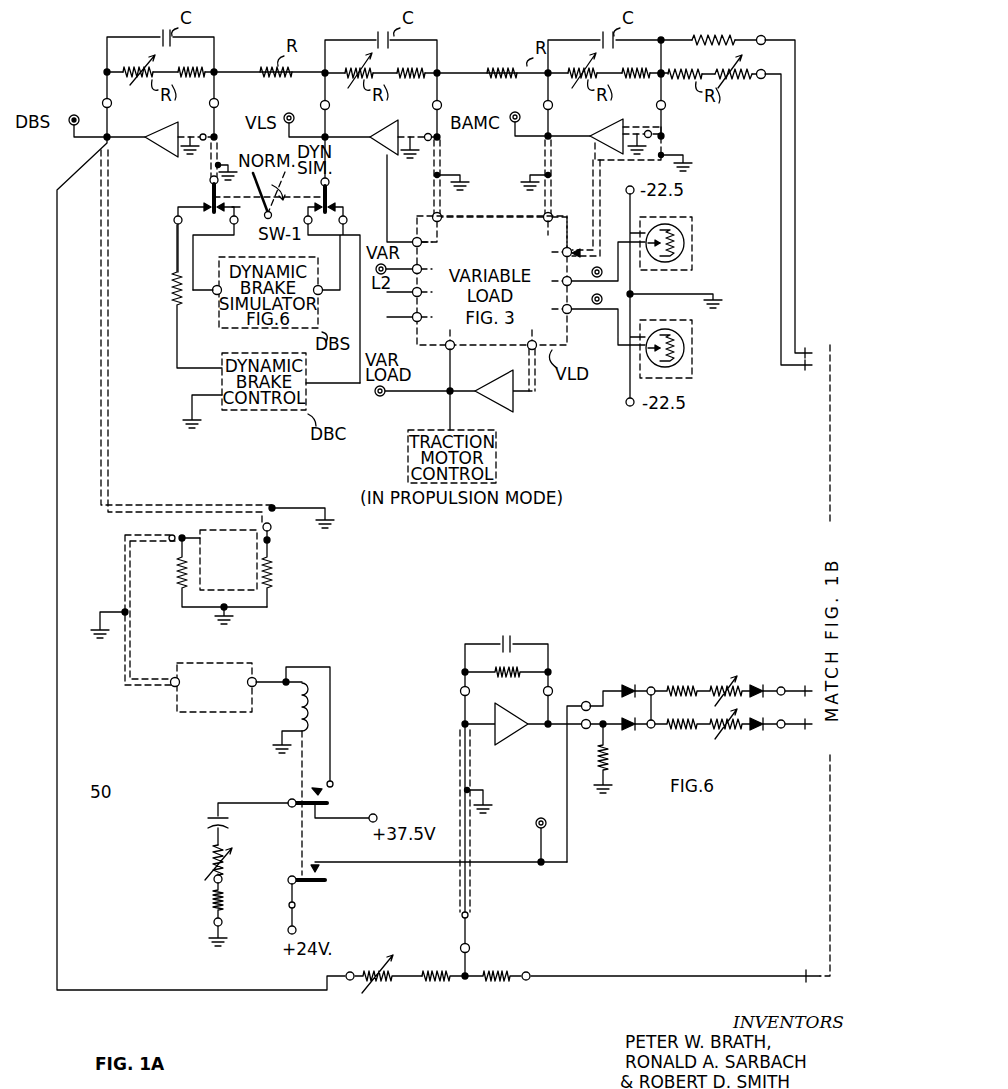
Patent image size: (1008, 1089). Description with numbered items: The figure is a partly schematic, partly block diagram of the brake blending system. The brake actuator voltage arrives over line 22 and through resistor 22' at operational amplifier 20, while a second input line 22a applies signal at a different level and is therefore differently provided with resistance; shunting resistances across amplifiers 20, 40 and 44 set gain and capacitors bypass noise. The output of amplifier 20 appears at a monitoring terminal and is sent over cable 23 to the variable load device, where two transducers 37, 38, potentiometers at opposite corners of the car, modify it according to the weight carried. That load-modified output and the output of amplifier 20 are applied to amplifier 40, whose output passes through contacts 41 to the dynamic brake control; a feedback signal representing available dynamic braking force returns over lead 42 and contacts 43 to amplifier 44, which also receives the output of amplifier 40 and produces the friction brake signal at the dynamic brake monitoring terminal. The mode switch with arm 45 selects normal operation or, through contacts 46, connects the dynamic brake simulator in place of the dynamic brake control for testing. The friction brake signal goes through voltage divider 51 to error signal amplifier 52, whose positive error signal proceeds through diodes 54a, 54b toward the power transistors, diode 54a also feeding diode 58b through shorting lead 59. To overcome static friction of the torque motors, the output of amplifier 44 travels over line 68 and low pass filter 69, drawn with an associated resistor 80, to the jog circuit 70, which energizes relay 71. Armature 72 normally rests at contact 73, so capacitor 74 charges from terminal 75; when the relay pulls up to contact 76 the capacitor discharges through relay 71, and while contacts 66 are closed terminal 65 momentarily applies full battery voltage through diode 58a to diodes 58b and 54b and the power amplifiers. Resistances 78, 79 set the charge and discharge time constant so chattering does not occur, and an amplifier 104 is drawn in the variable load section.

The operational amplifier 20 is at (600, 140).
The line 22 is at (798, 199).
The resistor 22' is at (719, 25).
The input line 22a is at (781, 297).
The cable 23 is at (556, 206).
The transducer 37 is at (696, 262).
The transducer 38 is at (692, 364).
The amplifier 40 is at (385, 145).
The contacts 41 is at (334, 200).
The lead 42 is at (175, 335).
The contacts 43 is at (208, 200).
The amplifier 44 is at (152, 152).
The arm 45 is at (247, 212).
The contacts 46 is at (206, 248).
The voltage divider 51 is at (418, 990).
The error signal amplifier 52 is at (506, 742).
The diode 54a is at (630, 733).
The diode 54b is at (750, 733).
The diode 58a is at (629, 684).
The diode 58b is at (760, 684).
The shorting lead 59 is at (653, 688).
The terminal 65 is at (296, 927).
The contacts 66 is at (323, 878).
The line 68 is at (110, 455).
The low pass filter 69 is at (246, 584).
The jog circuit 70 is at (226, 713).
The relay 71 is at (308, 712).
The armature 72 is at (332, 803).
The contact 73 is at (313, 810).
The capacitor 74 is at (228, 820).
The terminal 75 is at (375, 814).
The contact 76 is at (312, 794).
The resistance 78 is at (228, 864).
The resistance 79 is at (228, 904).
The resistor 80 is at (268, 541).
The amplifier 104 is at (525, 412).